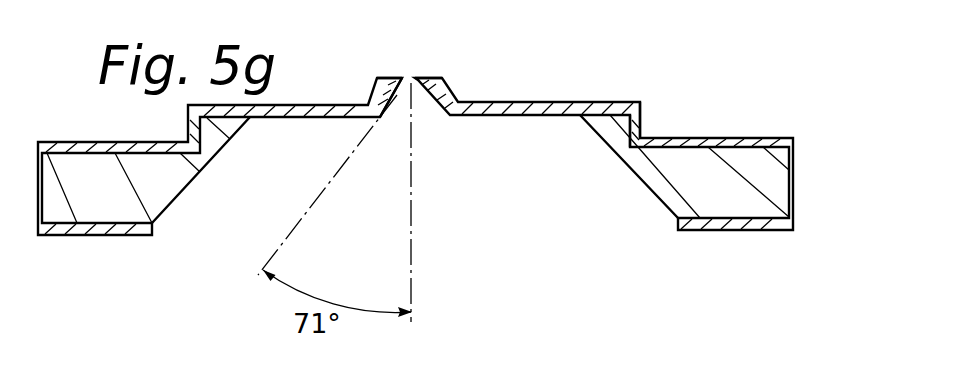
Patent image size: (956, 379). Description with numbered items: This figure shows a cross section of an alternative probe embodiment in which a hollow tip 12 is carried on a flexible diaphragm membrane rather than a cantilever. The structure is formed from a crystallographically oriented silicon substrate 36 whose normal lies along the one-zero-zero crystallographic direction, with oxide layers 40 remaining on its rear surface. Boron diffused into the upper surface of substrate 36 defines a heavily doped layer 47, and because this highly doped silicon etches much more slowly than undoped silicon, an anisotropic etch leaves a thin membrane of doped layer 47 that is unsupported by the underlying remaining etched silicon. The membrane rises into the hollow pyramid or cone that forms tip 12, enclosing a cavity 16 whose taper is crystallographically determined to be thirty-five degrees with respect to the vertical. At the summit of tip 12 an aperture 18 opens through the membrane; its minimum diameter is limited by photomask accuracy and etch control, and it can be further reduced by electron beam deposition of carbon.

The hollow tip 12 is at (462, 90).
The cavity 16 is at (385, 105).
The aperture 18 is at (408, 77).
The substrate 36 is at (782, 189).
The oxide layers 40 is at (78, 237).
The heavily doped layer 47 is at (642, 118).